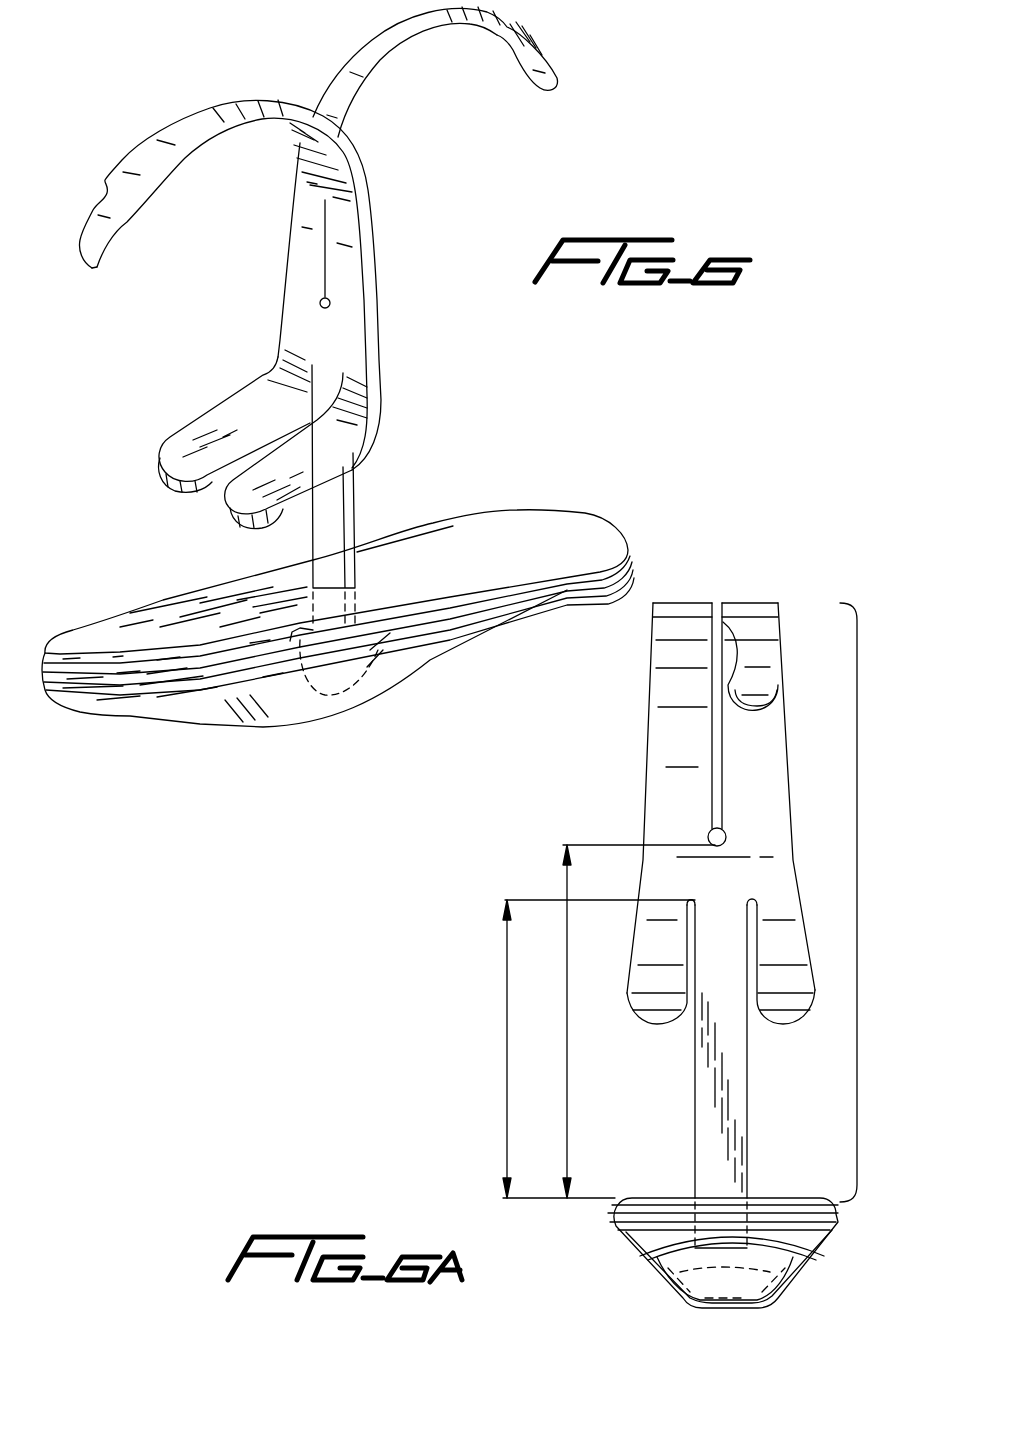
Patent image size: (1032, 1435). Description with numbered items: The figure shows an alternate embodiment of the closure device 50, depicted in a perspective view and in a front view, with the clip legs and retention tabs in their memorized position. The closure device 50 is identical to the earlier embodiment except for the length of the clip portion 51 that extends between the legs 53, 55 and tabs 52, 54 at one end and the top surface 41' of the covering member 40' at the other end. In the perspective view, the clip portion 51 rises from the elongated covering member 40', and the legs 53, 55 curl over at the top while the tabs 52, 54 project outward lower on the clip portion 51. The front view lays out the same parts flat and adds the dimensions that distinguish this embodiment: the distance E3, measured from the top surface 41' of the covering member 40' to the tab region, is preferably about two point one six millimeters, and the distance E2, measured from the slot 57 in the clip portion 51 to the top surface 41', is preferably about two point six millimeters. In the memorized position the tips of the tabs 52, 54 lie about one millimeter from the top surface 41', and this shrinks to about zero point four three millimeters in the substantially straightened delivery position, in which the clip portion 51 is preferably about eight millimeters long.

In FIG. 6, the closure device 50 is at (594, 107).
In FIG. 6, the leg 53 is at (173, 133).
In FIG. 6A, the leg 53 is at (752, 677).
In FIG. 6, the leg 55 is at (417, 45).
In FIG. 6, the tab 52 is at (176, 447).
In FIG. 6A, the tab 52 is at (655, 1003).
In FIG. 6, the tab 54 is at (233, 518).
In FIG. 6A, the tab 54 is at (790, 1005).
In FIG. 6, the covering member 40' is at (338, 590).
In FIG. 6A, the covering member 40' is at (749, 1253).
In FIG. 6, the top surface 41' is at (336, 582).
In FIG. 6A, the top surface 41' is at (726, 1168).
In FIG. 6A, the clip portion 51 is at (858, 900).
In FIG. 6A, the slot 57 is at (712, 832).
In FIG. 6A, the distance from the top surface to the tab region E3 is at (507, 1072).
In FIG. 6A, the distance from the slot to the top surface E2 is at (568, 1122).